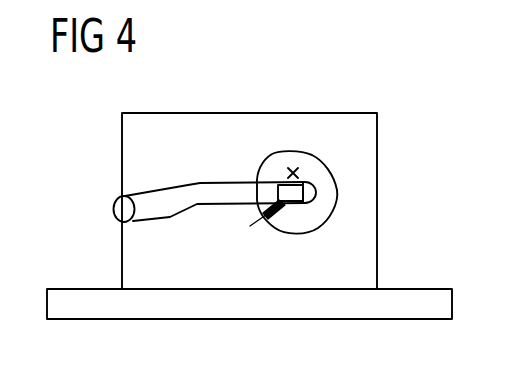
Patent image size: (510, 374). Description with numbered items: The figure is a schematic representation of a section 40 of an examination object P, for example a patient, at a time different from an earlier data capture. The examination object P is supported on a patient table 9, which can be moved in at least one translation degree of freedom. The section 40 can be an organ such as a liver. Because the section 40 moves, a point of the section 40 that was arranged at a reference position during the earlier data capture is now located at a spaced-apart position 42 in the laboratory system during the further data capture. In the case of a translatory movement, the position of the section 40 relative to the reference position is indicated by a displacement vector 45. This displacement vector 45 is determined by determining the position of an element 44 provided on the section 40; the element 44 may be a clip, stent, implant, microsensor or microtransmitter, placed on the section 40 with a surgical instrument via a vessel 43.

The examination object P is at (250, 122).
The patient table 9 is at (410, 298).
The section of an examination object 40 is at (258, 181).
The position 42 is at (302, 170).
The vessel 43 is at (168, 204).
The element 44 is at (315, 193).
The displacement vector 45 is at (251, 228).